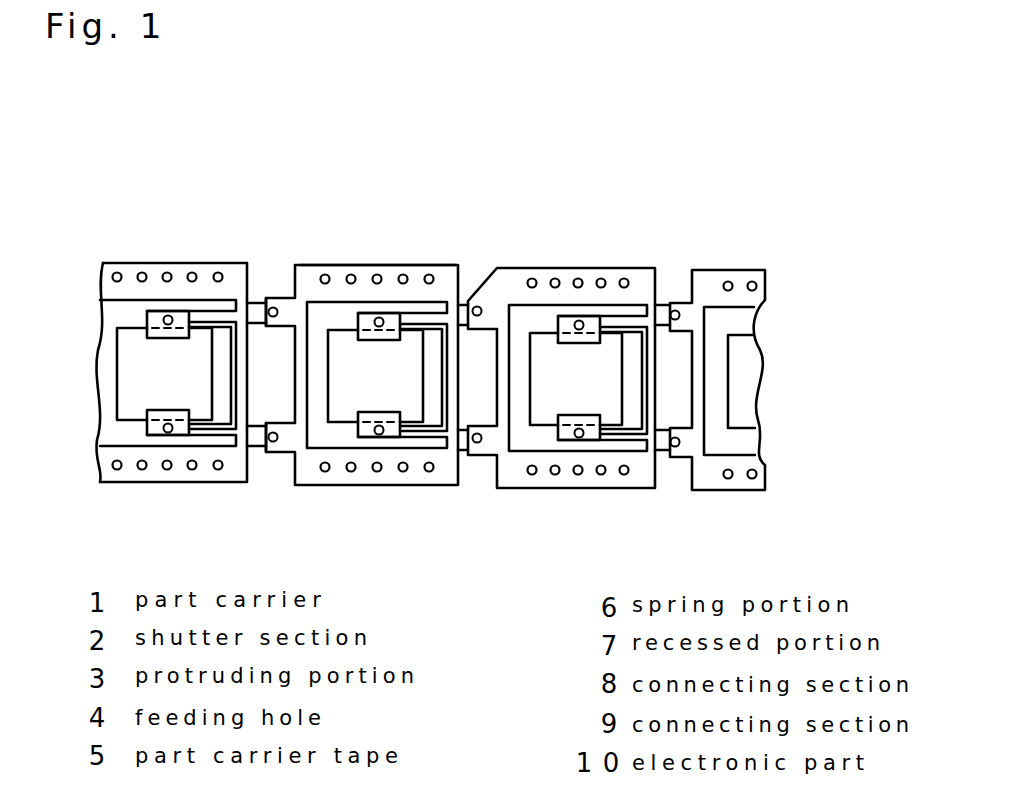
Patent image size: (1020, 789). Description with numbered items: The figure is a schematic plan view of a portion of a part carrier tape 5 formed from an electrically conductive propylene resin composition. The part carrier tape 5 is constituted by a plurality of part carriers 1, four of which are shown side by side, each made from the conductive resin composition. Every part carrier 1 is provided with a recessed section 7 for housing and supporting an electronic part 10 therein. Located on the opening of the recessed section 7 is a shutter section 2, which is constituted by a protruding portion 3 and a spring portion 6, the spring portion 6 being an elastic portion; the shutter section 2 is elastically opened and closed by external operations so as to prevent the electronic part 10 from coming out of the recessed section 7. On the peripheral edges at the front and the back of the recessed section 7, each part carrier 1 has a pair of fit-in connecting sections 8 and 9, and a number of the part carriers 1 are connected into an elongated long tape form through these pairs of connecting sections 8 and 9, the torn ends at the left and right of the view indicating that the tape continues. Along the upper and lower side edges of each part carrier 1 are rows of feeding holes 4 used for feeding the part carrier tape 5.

The part carrier 1 is at (172, 266).
The shutter section 2 is at (392, 318).
The protruding portion 3 is at (376, 318).
The feeding hole 4 is at (428, 473).
The part carrier tape 5 is at (373, 264).
The spring portion 6 is at (413, 318).
The recessed section 7 is at (318, 315).
The connecting section 8 is at (255, 448).
The connecting section 9 is at (278, 452).
The electronic part 10 is at (343, 412).